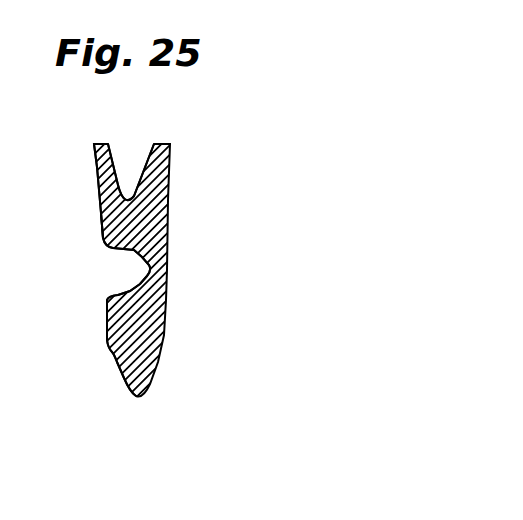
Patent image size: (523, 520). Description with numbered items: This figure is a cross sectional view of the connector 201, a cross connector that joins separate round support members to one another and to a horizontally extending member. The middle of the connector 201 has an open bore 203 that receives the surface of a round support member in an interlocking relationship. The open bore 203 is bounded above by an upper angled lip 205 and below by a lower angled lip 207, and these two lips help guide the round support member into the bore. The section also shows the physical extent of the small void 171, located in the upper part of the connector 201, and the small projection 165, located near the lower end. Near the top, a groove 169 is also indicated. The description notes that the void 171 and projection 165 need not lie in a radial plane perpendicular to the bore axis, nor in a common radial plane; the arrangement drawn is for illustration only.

The connector 201 is at (189, 200).
The V-shaped groove 169 is at (151, 141).
The small void 171 is at (98, 192).
The upper angled lip 205 is at (105, 241).
The open bore 203 is at (150, 268).
The lower angled lip 207 is at (107, 297).
The small projection 165 is at (112, 358).